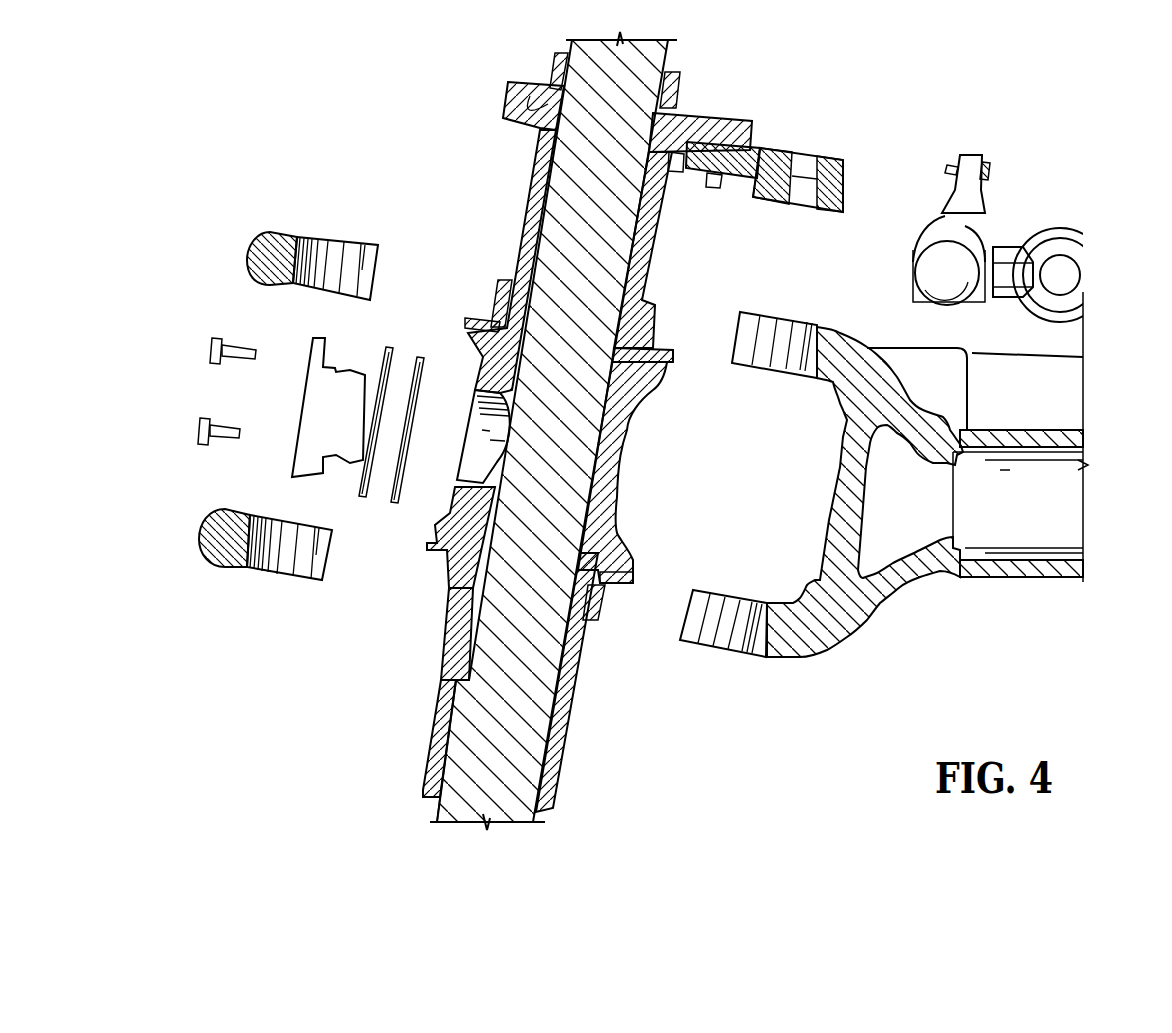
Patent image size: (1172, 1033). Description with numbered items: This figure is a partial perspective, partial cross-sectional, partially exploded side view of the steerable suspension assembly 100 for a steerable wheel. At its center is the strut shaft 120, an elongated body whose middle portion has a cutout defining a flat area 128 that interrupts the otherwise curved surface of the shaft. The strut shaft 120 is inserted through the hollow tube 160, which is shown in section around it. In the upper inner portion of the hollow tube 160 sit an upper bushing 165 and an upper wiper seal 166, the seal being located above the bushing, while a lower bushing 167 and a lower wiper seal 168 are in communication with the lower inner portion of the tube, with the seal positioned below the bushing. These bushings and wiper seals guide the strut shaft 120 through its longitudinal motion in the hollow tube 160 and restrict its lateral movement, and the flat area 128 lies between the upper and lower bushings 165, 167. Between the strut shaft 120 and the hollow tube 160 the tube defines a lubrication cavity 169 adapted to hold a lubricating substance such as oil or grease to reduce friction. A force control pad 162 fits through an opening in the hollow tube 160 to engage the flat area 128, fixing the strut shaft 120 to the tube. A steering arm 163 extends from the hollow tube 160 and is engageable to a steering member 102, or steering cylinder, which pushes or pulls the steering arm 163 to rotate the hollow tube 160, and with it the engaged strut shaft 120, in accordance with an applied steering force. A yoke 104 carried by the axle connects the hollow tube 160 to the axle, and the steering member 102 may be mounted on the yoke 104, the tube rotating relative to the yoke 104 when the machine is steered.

The steerable suspension assembly 100 is at (300, 163).
The steering member 102 is at (1013, 252).
The yoke 104 is at (813, 637).
The strut shaft 120 is at (440, 812).
The flat area 128 is at (497, 487).
The hollow tube 160 is at (560, 713).
The force control pad 162 is at (313, 418).
The steering arm 163 is at (800, 172).
The upper bushing 165 is at (503, 120).
The upper wiper seal 166 is at (550, 167).
The lower bushing 167 is at (452, 680).
The lower wiper seal 168 is at (438, 748).
The lubrication cavity 169 is at (600, 473).